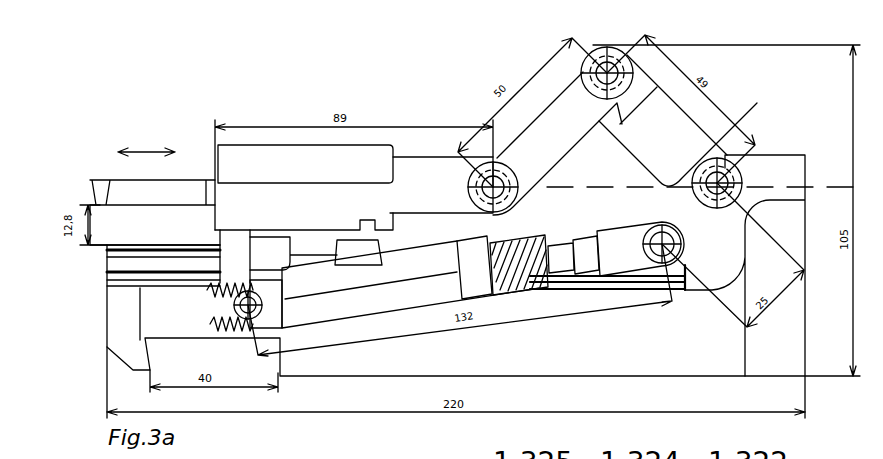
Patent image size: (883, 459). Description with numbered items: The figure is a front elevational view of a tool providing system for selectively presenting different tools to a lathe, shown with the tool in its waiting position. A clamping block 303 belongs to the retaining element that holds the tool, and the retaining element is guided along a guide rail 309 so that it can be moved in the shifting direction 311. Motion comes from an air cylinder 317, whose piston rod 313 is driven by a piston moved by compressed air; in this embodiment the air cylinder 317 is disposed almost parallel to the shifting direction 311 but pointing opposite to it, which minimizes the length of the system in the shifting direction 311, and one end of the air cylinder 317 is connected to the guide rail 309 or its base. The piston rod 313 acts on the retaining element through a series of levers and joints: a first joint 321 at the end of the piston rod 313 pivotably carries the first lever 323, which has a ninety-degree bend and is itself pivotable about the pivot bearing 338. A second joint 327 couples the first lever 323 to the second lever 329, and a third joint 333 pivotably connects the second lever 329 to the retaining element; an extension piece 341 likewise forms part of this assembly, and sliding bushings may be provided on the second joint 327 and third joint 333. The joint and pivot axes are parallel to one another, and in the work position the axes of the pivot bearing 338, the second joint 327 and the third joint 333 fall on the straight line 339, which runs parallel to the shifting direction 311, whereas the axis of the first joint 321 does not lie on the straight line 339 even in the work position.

The clamping block 303 is at (237, 162).
The guide rail 309 is at (156, 258).
The shifting direction 311 is at (152, 146).
The piston rod 313 is at (562, 262).
The air cylinder 317 is at (387, 307).
The first joint 321 is at (658, 237).
The first lever 323 is at (695, 147).
The second joint 327 is at (618, 63).
The second lever 329 is at (537, 120).
The third joint 333 is at (480, 190).
The pivot bearing 338 is at (738, 179).
The straight line 339 is at (831, 188).
The extension piece 341 is at (415, 170).